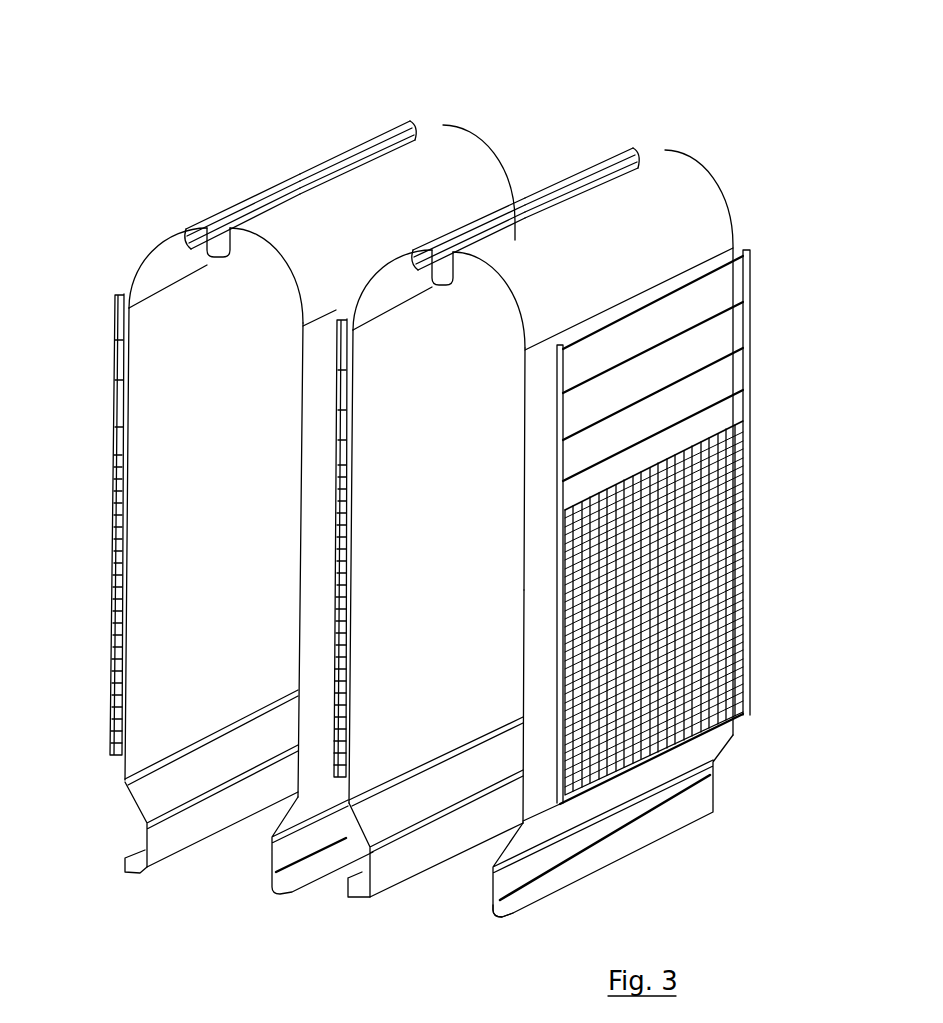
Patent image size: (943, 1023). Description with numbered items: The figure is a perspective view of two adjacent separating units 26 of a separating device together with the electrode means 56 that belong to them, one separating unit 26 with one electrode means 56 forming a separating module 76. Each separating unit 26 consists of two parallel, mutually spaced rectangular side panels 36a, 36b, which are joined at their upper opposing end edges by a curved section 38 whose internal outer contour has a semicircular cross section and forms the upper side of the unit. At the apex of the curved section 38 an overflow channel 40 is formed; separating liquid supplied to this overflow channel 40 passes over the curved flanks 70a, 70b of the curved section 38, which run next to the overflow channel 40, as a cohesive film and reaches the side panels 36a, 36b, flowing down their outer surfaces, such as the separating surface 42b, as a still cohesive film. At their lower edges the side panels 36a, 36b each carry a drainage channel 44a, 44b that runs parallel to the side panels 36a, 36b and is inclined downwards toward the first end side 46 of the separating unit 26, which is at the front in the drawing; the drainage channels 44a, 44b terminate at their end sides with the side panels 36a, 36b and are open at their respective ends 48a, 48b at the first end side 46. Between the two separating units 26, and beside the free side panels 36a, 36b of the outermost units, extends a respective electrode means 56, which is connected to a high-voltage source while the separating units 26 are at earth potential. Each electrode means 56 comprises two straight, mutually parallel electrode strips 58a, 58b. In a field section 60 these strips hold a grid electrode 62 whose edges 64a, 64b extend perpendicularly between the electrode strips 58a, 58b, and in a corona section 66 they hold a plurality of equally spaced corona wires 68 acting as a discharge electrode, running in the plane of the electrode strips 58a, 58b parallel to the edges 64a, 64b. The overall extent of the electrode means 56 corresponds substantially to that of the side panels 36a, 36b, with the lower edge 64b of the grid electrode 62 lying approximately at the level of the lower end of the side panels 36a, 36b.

The separating unit 26 is at (437, 87).
The side panel 36a is at (167, 550).
The side panel 36b is at (323, 448).
The curved section 38 is at (455, 155).
The overflow channel 40 is at (412, 198).
The separating surface 42b is at (320, 675).
The drainage channel 44a is at (170, 825).
The drainage channel 44b is at (296, 851).
The first end side 46 is at (523, 597).
The end of drainage channel 48a is at (357, 900).
The end of drainage channel 48b is at (495, 913).
The electrode means 56 is at (97, 338).
The electrode strip 58a is at (560, 370).
The electrode strip 58b is at (748, 323).
The field section 60 is at (641, 543).
The grid electrode 62 is at (573, 552).
The edge of grid electrode 64a is at (706, 436).
The lower edge of grid electrode 64b is at (648, 763).
The corona section 66 is at (545, 411).
The corona wires 68 is at (624, 365).
The curved flank 70a is at (287, 178).
The curved flank 70b is at (593, 183).
The separating module 76 is at (632, 86).